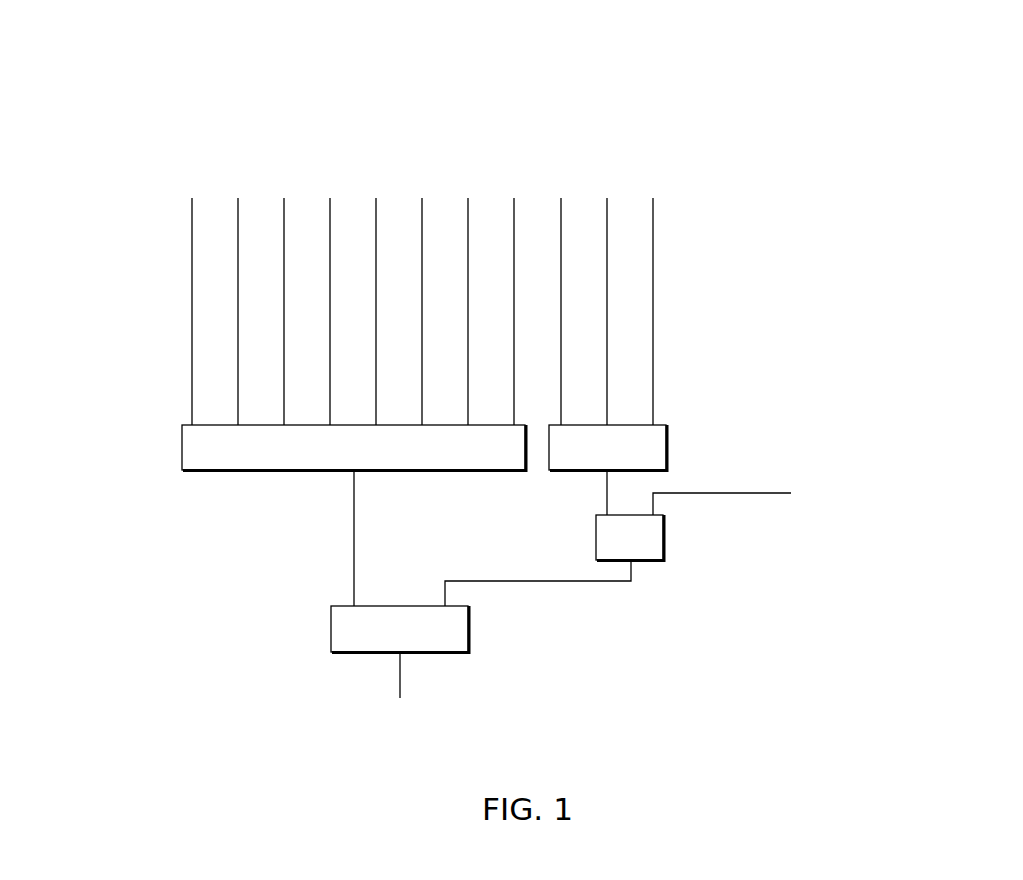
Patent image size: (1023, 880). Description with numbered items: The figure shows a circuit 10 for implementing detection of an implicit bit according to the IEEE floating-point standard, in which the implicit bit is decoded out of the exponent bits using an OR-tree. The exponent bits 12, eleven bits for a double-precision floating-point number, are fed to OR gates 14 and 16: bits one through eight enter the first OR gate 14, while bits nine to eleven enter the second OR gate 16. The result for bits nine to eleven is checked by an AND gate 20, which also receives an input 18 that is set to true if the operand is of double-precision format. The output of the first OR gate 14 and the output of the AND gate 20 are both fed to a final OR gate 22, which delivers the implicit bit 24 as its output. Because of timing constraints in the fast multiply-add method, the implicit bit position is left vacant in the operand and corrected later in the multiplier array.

The circuit 10 is at (655, 111).
The exponent bits 12 is at (122, 153).
The OR gate 14 is at (182, 446).
The OR gate 16 is at (667, 445).
The operand is double precision input 18 is at (830, 462).
The AND gate 20 is at (664, 537).
The final OR gate 22 is at (469, 627).
The implicit bit 24 is at (408, 728).